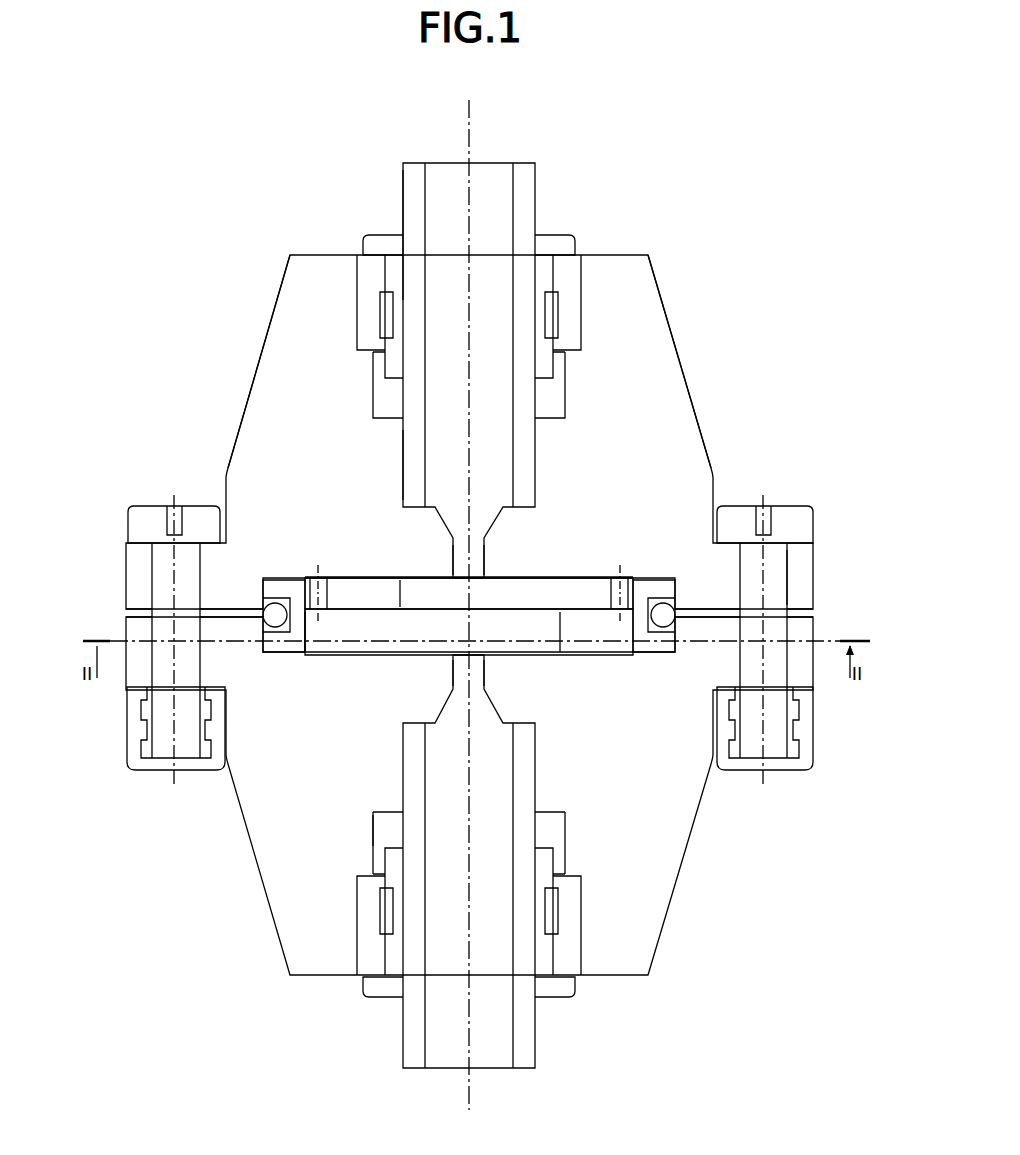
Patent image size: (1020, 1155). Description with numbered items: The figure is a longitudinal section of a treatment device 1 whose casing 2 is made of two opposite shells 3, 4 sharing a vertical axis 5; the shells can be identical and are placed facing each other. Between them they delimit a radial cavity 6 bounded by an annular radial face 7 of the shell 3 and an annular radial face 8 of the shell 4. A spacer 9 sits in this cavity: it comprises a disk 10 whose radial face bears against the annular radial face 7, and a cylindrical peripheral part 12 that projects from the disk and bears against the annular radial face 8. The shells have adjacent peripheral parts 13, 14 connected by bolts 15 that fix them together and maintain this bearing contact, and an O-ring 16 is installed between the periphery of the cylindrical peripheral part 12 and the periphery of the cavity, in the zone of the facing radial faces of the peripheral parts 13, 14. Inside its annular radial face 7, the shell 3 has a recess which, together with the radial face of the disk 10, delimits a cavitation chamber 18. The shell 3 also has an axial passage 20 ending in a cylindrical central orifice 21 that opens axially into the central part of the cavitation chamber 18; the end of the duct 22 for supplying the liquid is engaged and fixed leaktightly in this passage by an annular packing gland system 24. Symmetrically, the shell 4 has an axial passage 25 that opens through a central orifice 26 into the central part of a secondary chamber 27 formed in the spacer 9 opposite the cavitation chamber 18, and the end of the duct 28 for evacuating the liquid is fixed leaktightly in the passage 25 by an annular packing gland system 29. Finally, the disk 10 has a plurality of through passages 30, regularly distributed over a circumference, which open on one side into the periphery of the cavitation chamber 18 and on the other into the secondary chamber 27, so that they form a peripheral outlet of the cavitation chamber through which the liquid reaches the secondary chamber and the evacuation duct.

The treatment device 1 is at (703, 298).
The casing 2 is at (682, 362).
The shell 3 is at (270, 341).
The shell 4 is at (313, 978).
The vertical axis 5 is at (493, 187).
The radial cavity 6 is at (655, 577).
The annular radial face 7 is at (284, 578).
The annular radial face 8 is at (285, 652).
The spacer 9 is at (593, 612).
The disk 10 is at (423, 595).
The cylindrical peripheral part 12 is at (305, 633).
The peripheral part 13 is at (800, 570).
The peripheral part 14 is at (800, 738).
The bolts 15 is at (775, 593).
The O-ring 16 is at (265, 610).
The cavitation chamber 18 is at (353, 577).
The axial passage 20 is at (403, 462).
The central orifice 21 is at (477, 555).
The duct 22 is at (405, 185).
The annular packing gland system 24 is at (580, 240).
The axial passage 25 is at (373, 849).
The central orifice 26 is at (476, 675).
The secondary chamber 27 is at (553, 628).
The duct 28 is at (525, 1050).
The annular packing gland system 29 is at (383, 997).
The through passages 30 is at (628, 606).